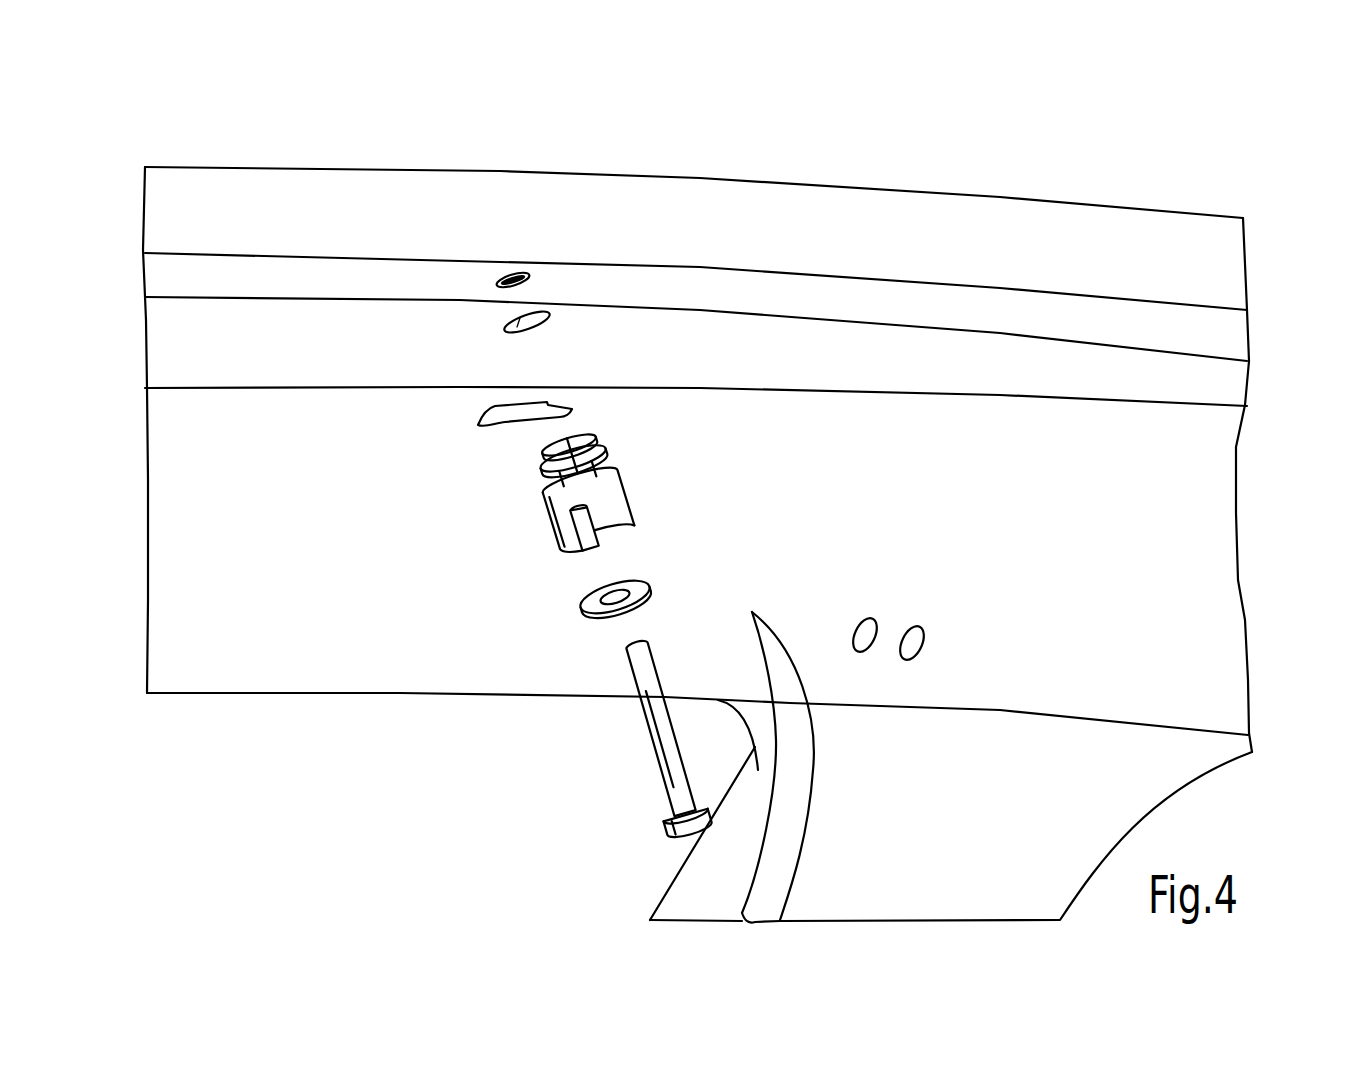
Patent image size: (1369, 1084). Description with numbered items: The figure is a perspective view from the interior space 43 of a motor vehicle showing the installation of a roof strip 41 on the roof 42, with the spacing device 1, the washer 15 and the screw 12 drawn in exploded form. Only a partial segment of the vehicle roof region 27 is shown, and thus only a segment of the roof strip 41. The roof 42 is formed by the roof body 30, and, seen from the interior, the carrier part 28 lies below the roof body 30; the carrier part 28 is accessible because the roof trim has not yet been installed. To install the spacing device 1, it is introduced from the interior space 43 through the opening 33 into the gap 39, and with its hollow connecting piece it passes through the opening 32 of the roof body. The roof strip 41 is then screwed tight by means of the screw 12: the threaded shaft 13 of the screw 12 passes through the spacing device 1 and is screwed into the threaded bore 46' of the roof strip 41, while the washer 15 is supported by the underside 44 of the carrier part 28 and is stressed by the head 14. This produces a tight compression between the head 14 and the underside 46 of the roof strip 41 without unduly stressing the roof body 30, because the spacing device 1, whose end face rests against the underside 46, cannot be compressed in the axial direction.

The spacing device 1 is at (545, 493).
The screw 12 is at (653, 742).
The shaft 13 is at (665, 707).
The head 14 is at (663, 827).
The washer 15 is at (578, 612).
The vehicle roof region 27 is at (1270, 242).
The carrier part 28 is at (193, 455).
The roof body 30 is at (162, 357).
The opening 32 is at (507, 333).
The opening 33 is at (498, 432).
The gap 39 is at (597, 376).
The roof strip 41 is at (508, 190).
The roof 42 is at (170, 320).
The interior space 43 is at (515, 833).
The underside 44 is at (438, 440).
The underside 46 is at (658, 258).
The threaded bore 46' is at (444, 311).